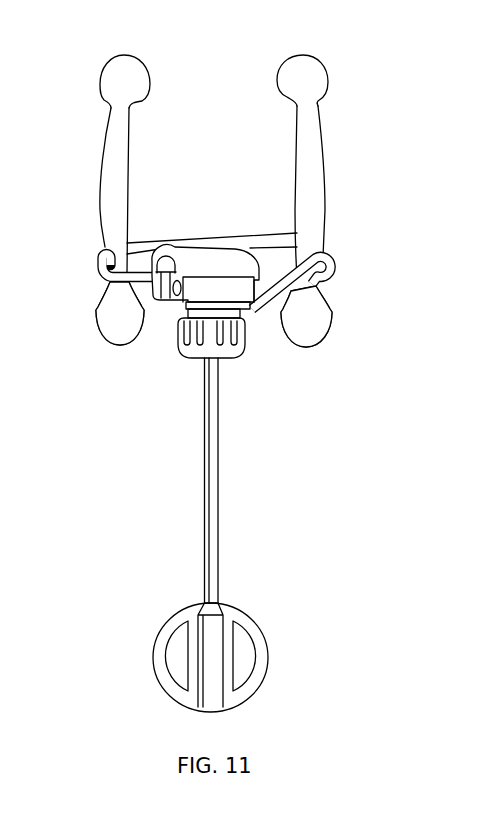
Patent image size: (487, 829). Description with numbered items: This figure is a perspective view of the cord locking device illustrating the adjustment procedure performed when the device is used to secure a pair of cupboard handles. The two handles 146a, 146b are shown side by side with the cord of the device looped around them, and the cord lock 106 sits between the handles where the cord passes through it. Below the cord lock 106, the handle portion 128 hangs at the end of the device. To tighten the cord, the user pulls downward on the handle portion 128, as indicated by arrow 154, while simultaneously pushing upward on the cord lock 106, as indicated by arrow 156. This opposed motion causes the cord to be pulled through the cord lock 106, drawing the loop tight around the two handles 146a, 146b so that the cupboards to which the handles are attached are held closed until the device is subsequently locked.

The cord lock 106 is at (163, 336).
The handle portion 128 is at (265, 651).
The handle 146a is at (101, 216).
The handle 146b is at (326, 207).
The arrow 154 is at (234, 542).
The arrow 156 is at (234, 376).